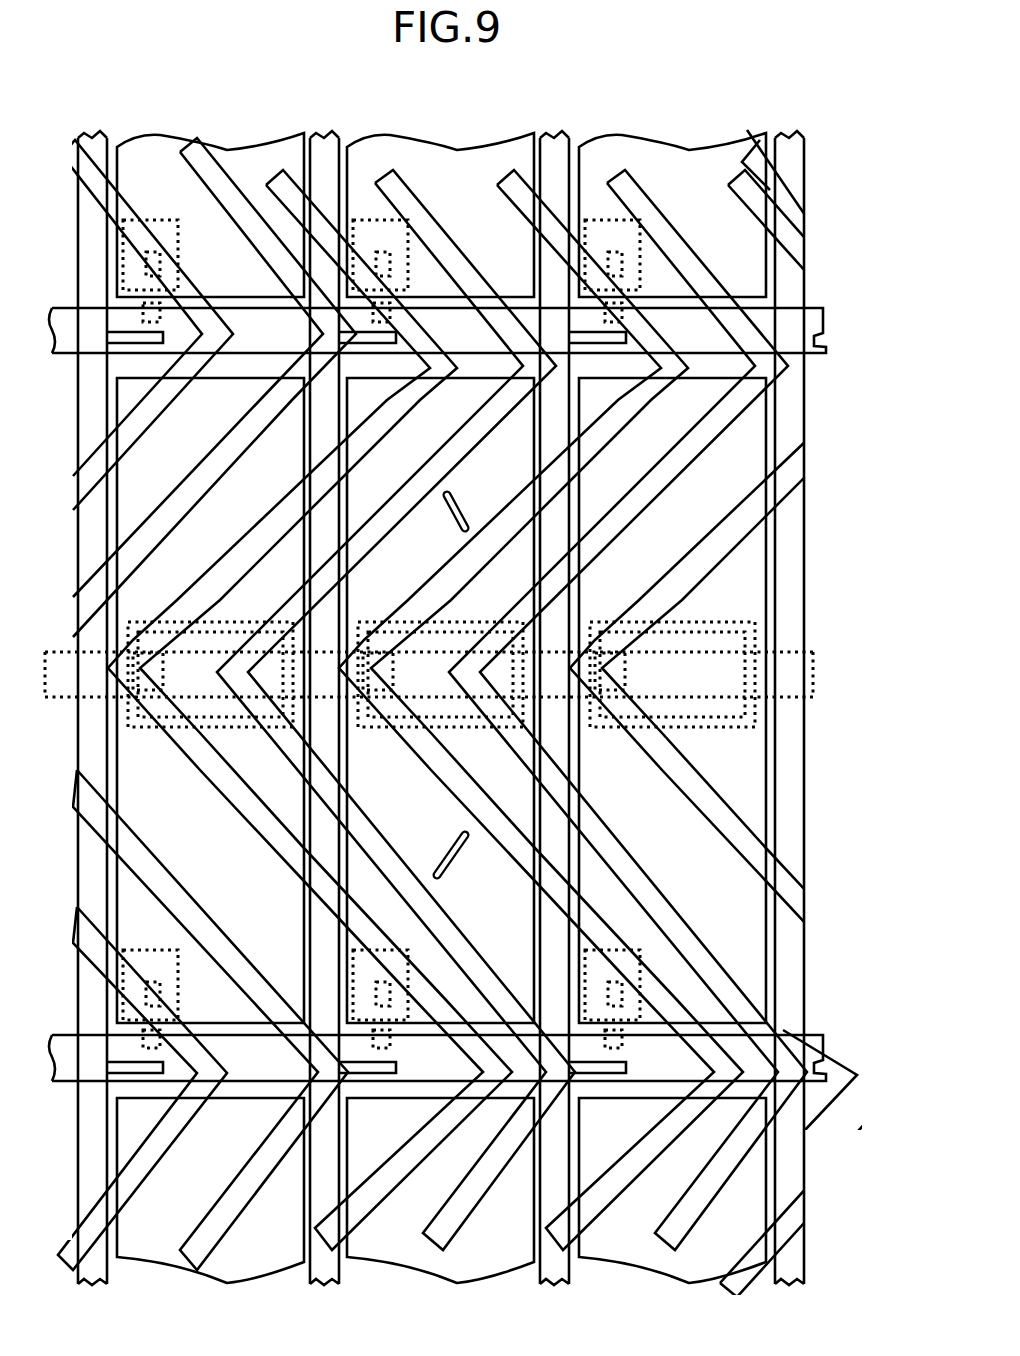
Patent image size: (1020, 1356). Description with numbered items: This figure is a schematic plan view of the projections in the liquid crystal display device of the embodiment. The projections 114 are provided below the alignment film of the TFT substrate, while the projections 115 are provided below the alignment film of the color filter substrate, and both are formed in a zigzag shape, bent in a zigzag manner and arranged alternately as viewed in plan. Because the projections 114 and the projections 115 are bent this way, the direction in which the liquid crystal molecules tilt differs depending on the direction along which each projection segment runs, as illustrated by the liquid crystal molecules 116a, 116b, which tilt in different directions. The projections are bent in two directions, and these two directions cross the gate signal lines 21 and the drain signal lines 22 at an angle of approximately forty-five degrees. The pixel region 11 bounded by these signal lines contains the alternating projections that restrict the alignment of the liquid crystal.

The common electrode 11 is at (733, 947).
The gate signal line 21 is at (740, 1065).
The drain signal line 22 is at (787, 1155).
The projection 114 is at (705, 220).
The projection 115 is at (627, 403).
The liquid crystal molecule 116a is at (472, 522).
The liquid crystal molecule 116b is at (472, 840).